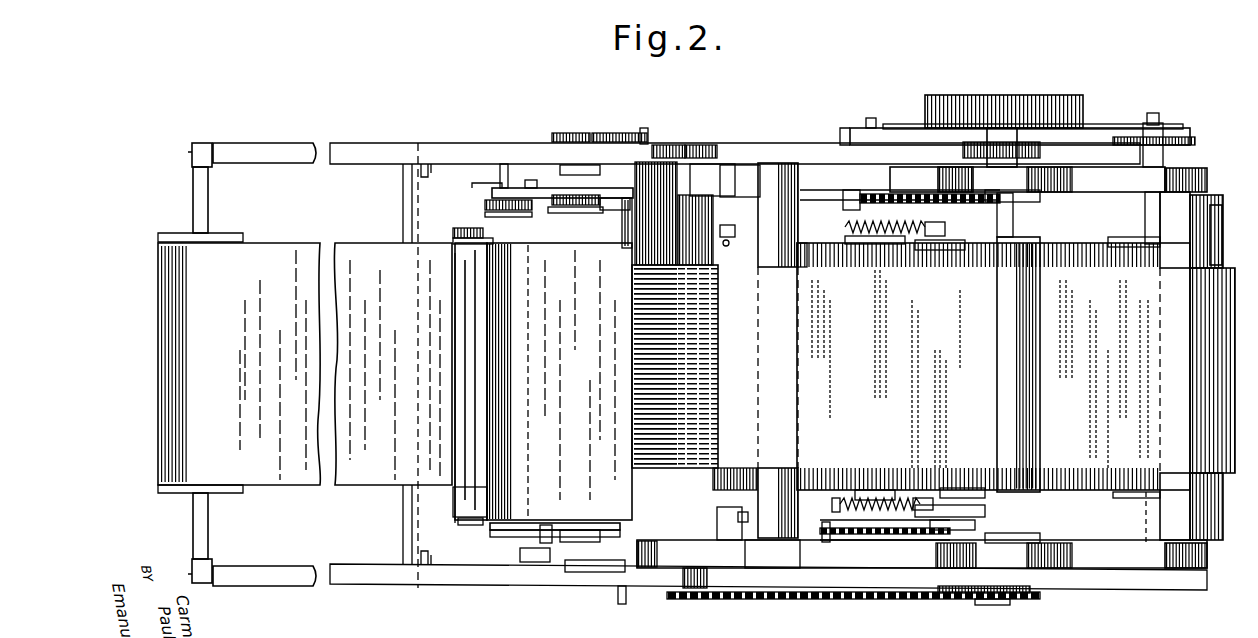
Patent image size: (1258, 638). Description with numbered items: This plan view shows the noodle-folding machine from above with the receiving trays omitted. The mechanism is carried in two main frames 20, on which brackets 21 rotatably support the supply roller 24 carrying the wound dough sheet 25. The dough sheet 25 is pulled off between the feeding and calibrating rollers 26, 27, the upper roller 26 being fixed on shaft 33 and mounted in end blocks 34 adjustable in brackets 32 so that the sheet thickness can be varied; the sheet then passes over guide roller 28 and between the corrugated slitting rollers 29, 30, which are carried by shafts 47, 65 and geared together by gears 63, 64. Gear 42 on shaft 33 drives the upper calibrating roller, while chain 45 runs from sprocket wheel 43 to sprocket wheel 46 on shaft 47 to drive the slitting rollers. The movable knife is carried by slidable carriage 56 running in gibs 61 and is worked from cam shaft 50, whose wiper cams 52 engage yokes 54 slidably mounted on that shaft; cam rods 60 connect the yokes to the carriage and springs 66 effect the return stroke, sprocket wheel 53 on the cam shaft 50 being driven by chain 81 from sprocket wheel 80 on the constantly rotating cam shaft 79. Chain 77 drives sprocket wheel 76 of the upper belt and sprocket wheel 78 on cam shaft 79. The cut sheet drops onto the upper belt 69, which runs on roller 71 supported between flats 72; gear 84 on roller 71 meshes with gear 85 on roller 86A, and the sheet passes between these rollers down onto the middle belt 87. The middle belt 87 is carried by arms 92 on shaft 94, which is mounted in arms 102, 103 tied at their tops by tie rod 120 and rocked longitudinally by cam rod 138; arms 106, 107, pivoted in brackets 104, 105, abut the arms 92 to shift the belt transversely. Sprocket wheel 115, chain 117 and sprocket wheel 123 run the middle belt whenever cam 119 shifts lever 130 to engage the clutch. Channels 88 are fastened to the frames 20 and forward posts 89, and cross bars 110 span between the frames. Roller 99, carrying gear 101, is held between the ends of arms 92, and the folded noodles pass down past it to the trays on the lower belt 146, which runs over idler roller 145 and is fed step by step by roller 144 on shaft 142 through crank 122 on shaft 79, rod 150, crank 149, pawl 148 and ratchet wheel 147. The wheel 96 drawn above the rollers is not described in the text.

The main frames 20 is at (822, 165).
The brackets 21 is at (1117, 183).
The roller 24 is at (1207, 229).
The dough sheet 25 is at (1167, 270).
The feeding and calibrating roller 26 is at (967, 418).
The feeding and calibrating roller 27 is at (1030, 237).
The guide roller 28 is at (804, 250).
The corrugated slitting roller 29 is at (713, 430).
The corrugated slitting roller 30 is at (633, 290).
The brackets 32 is at (1047, 167).
The shaft 33 is at (1007, 217).
The end blocks 34 is at (1013, 190).
The gear 42 is at (963, 148).
The sprocket wheel 43 is at (1038, 603).
The chain 45 is at (810, 598).
The sprocket wheel 46 is at (673, 595).
The shaft 47 is at (699, 164).
The cam shaft 50 is at (987, 518).
The wiper cams 52 is at (950, 498).
The sprocket wheel 53 is at (978, 538).
The yokes 54 is at (938, 227).
The slidable carriage 56 is at (720, 237).
The cam rods 60 is at (808, 508).
The gibs 61 is at (735, 190).
The gear 63 is at (698, 144).
The gear 64 is at (654, 144).
The shaft 65 is at (659, 171).
The springs 66 is at (910, 250).
The upper endless belt 69 is at (462, 492).
The roller 71 is at (530, 247).
The flats 72 is at (512, 187).
The sprocket wheel 76 is at (563, 206).
The chain 77 is at (813, 202).
The sprocket wheel 78 is at (916, 194).
The cam shaft 79 is at (875, 477).
The sprocket wheel 80 is at (826, 534).
The chain 81 is at (888, 541).
The gear 84 is at (520, 186).
The gear 85 is at (483, 203).
The roller 86A is at (493, 217).
The middle endless belt 87 is at (462, 463).
The channels 88 is at (471, 145).
The forward posts 89 is at (440, 180).
The arms 92 is at (457, 239).
The shaft 94 is at (620, 597).
The hand wheel 96 is at (1030, 95).
The roller 99 is at (458, 522).
The gear 101 is at (452, 227).
The arm 102 is at (575, 558).
The arm 103 is at (573, 165).
The bracket 104 is at (590, 517).
The bracket 105 is at (590, 204).
The arm 106 is at (620, 520).
The arm 107 is at (579, 218).
The cross bars 110 is at (504, 163).
The sprocket wheel 115 is at (639, 130).
The chain 117 is at (595, 132).
The cam 119 is at (874, 240).
The tie rod 120 is at (630, 240).
The crank 122 is at (859, 128).
The sprocket wheel 123 is at (552, 133).
The lever 130 is at (748, 243).
The cam rod 138 is at (752, 481).
The shaft 142 is at (1150, 212).
The roller 144 is at (1120, 240).
The idler roller 145 is at (228, 491).
The lower endless belt 146 is at (340, 487).
The ratchet wheel 147 is at (1187, 140).
The pawl 148 is at (1160, 133).
The crank 149 is at (1142, 127).
The rod 150 is at (1095, 124).